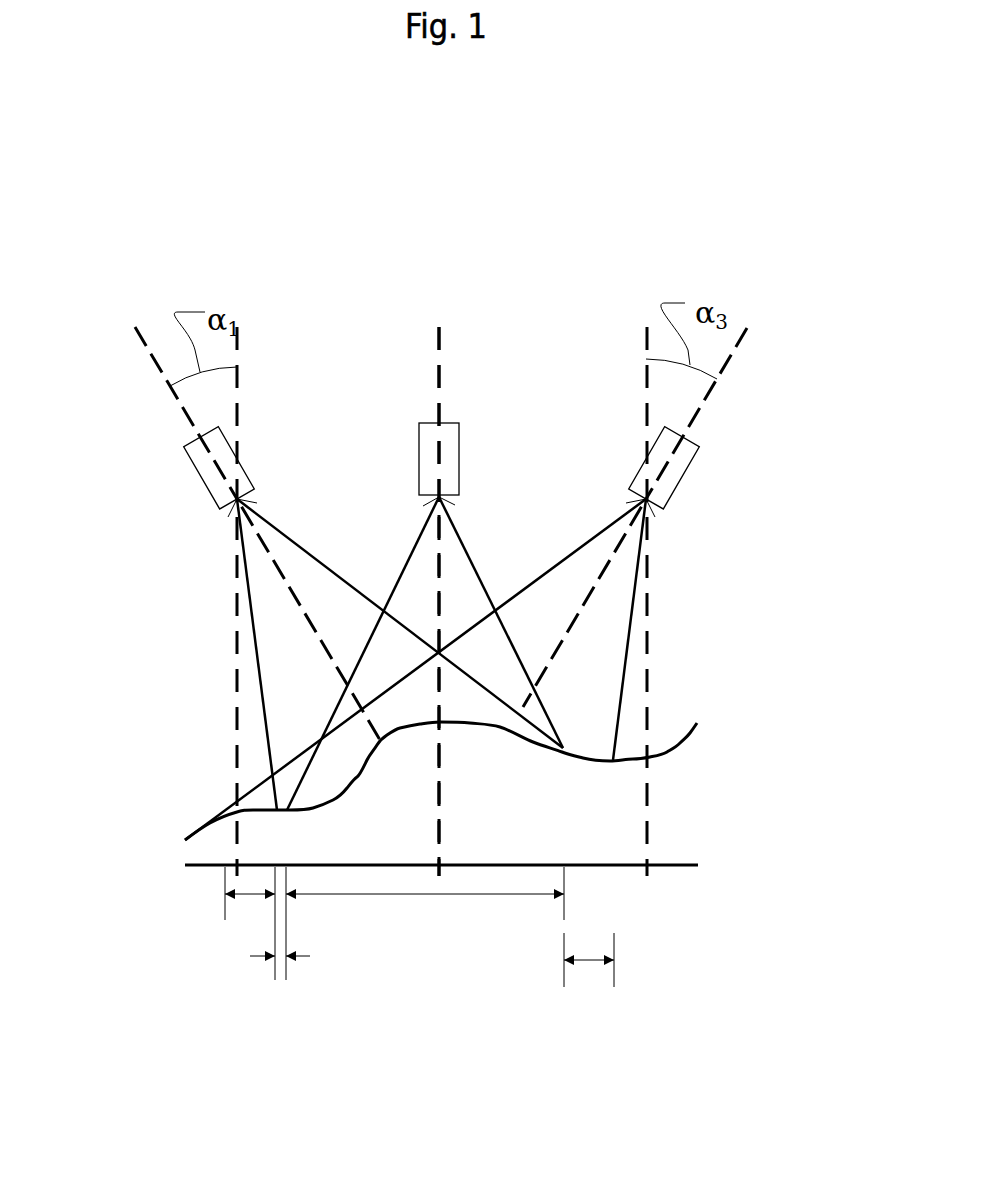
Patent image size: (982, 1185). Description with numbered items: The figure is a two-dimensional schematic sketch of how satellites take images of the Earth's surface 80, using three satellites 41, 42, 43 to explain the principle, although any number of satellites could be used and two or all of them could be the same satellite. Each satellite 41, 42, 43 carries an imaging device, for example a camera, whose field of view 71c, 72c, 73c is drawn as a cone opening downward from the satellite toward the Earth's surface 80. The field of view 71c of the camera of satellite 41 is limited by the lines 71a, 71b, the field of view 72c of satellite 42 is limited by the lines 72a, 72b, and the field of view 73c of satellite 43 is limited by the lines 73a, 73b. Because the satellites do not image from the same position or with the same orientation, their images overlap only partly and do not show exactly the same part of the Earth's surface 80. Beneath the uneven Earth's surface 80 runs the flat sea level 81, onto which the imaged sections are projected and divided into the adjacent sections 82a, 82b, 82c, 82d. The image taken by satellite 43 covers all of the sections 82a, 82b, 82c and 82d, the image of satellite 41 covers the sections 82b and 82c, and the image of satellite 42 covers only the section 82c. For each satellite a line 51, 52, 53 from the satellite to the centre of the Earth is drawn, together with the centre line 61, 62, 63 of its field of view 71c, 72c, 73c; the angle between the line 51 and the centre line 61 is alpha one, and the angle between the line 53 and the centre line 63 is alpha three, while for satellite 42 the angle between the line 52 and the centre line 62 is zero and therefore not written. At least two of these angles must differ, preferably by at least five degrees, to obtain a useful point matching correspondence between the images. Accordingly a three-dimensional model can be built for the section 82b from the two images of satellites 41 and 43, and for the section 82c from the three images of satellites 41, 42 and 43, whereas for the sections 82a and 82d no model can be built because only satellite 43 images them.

The satellite 41 is at (205, 485).
The satellite 42 is at (419, 460).
The satellite 43 is at (683, 480).
The line from satellite to centre of the Earth 51 is at (237, 350).
The line from satellite to centre of the Earth 52 is at (438, 390).
The line from satellite to centre of the Earth 53 is at (647, 400).
The centre line of field of view 61 is at (181, 405).
The centre line of field of view 62 is at (439, 360).
The centre line of field of view 63 is at (698, 413).
The field of view limiting line 71a is at (255, 660).
The field of view limiting line 71b is at (332, 570).
The field of view 71c is at (275, 600).
The field of view limiting line 72a is at (427, 520).
The field of view limiting line 72b is at (454, 528).
The field of view 72c is at (457, 605).
The field of view limiting line 73a is at (610, 525).
The field of view limiting line 73b is at (633, 628).
The field of view 73c is at (620, 588).
The Earth's surface 80 is at (675, 745).
The sea level 81 is at (670, 863).
The section of the Earth's surface 82a is at (252, 897).
The section of the Earth's surface 82b is at (280, 957).
The section of the Earth's surface 82c is at (425, 895).
The section of the Earth's surface 82d is at (588, 963).